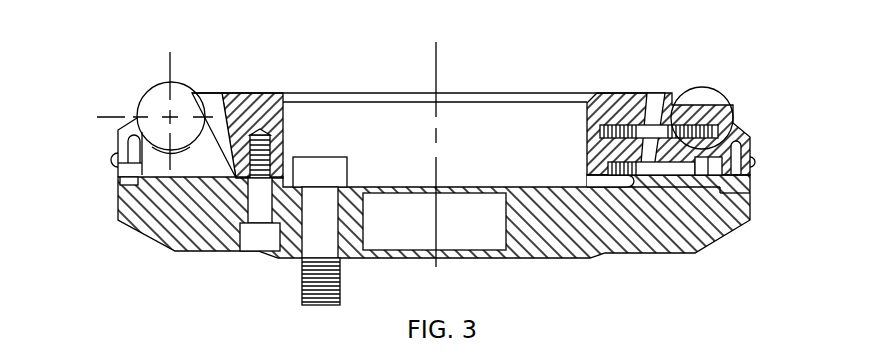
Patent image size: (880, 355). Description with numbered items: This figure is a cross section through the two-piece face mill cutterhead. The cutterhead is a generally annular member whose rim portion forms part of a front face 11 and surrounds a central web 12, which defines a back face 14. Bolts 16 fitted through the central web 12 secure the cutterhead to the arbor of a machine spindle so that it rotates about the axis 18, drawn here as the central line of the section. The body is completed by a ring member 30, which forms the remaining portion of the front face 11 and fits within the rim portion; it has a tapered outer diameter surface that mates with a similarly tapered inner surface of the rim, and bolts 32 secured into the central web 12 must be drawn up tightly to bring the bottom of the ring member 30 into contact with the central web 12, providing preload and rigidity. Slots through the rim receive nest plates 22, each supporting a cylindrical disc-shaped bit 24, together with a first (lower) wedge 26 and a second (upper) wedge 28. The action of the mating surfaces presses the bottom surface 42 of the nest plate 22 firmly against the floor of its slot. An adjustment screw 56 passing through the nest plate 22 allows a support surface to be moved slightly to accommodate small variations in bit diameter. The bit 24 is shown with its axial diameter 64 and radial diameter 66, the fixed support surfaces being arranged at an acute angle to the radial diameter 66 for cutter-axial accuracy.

The front face 11 is at (380, 93).
The central web 12 is at (542, 252).
The back face 14 is at (590, 260).
The bolts 16 is at (328, 250).
The axis 18 is at (439, 52).
The nest plate 22 is at (208, 97).
The disc-shaped bit 24 is at (160, 87).
The first (lower) wedge 26 is at (686, 170).
The second (upper) wedge 28 is at (707, 115).
The ring member 30 is at (253, 105).
The bolts 32 is at (258, 249).
The bottom surface 42 is at (120, 186).
The adjustment screw 56 is at (112, 160).
The axial diameter 64 is at (172, 64).
The radial diameter 66 is at (108, 116).